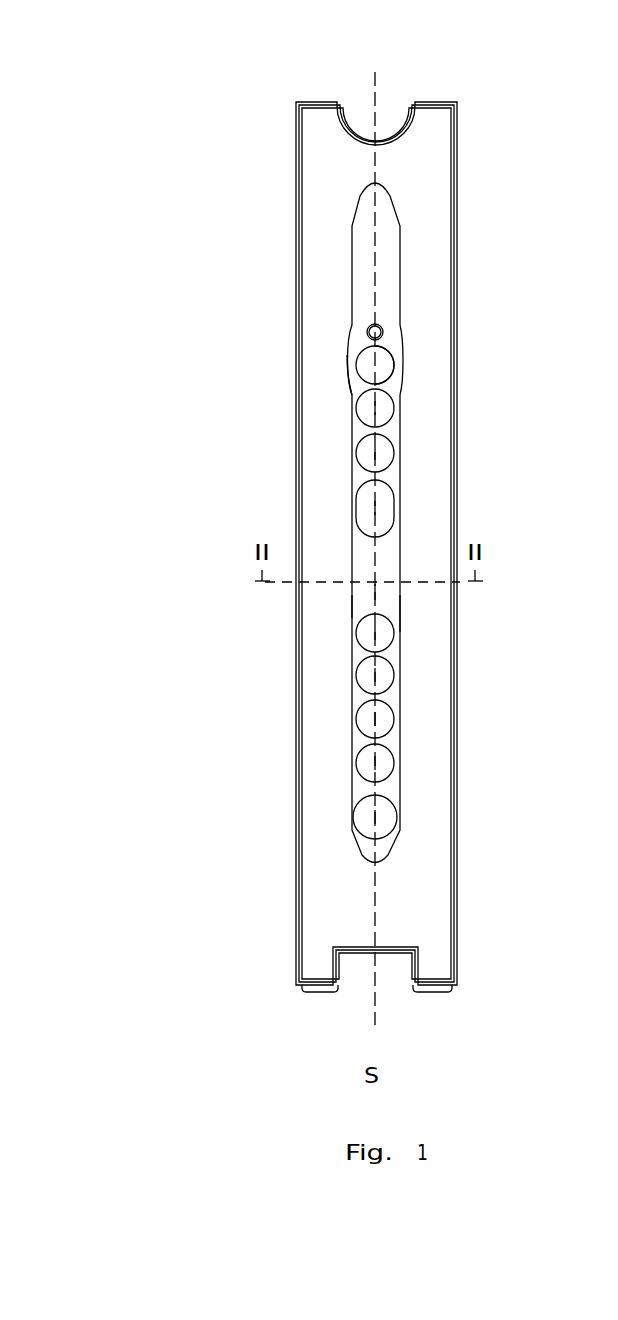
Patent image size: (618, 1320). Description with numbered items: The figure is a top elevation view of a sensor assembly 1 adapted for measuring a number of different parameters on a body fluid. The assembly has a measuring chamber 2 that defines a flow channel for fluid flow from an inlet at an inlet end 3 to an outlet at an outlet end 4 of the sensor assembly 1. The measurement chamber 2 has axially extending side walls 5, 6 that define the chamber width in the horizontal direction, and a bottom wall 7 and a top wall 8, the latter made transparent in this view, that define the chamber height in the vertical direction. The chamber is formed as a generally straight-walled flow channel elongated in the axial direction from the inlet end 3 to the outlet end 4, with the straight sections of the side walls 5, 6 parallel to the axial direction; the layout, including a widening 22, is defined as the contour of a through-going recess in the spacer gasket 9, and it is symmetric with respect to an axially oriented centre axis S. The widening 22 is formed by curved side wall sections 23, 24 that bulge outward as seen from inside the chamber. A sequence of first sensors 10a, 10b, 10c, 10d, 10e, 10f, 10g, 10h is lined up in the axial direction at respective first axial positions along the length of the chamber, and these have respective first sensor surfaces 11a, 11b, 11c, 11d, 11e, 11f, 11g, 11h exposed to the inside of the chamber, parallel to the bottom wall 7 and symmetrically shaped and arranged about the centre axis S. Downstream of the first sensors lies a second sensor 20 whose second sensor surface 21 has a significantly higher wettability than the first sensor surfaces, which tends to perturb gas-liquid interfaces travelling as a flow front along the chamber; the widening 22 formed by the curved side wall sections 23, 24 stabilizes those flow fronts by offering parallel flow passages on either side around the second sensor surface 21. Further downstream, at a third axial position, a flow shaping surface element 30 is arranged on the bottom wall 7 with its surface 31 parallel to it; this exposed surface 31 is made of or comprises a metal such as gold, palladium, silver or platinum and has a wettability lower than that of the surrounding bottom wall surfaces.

The sensor assembly 1 is at (124, 125).
The measuring chamber 2 is at (355, 245).
The inlet end 3 is at (293, 904).
The outlet end 4 is at (294, 152).
The side wall 5 is at (358, 606).
The side wall 6 is at (389, 603).
The bottom wall 7 is at (373, 592).
The top wall 8 is at (398, 616).
The spacer gasket 9 is at (440, 197).
The first sensor 10a is at (355, 812).
The first sensor 10b is at (357, 758).
The first sensor 10c is at (357, 714).
The first sensor 10d is at (357, 670).
The first sensor 10e is at (357, 628).
The first sensor 10f is at (357, 503).
The first sensor 10g is at (357, 447).
The first sensor 10h is at (357, 400).
The first sensor surface 11a is at (375, 817).
The first sensor surface 11b is at (375, 763).
The first sensor surface 11c is at (375, 719).
The first sensor surface 11d is at (375, 675).
The first sensor surface 11e is at (375, 633).
The first sensor surface 11f is at (375, 508).
The first sensor surface 11g is at (375, 453).
The first sensor surface 11h is at (375, 408).
The second sensor 20 is at (391, 362).
The second sensor surface 21 is at (383, 367).
The widening 22 is at (345, 344).
The curved side wall section 23 is at (350, 368).
The curved side wall section 24 is at (401, 353).
The flow shaping surface element 30 is at (385, 327).
The surface 31 is at (382, 334).